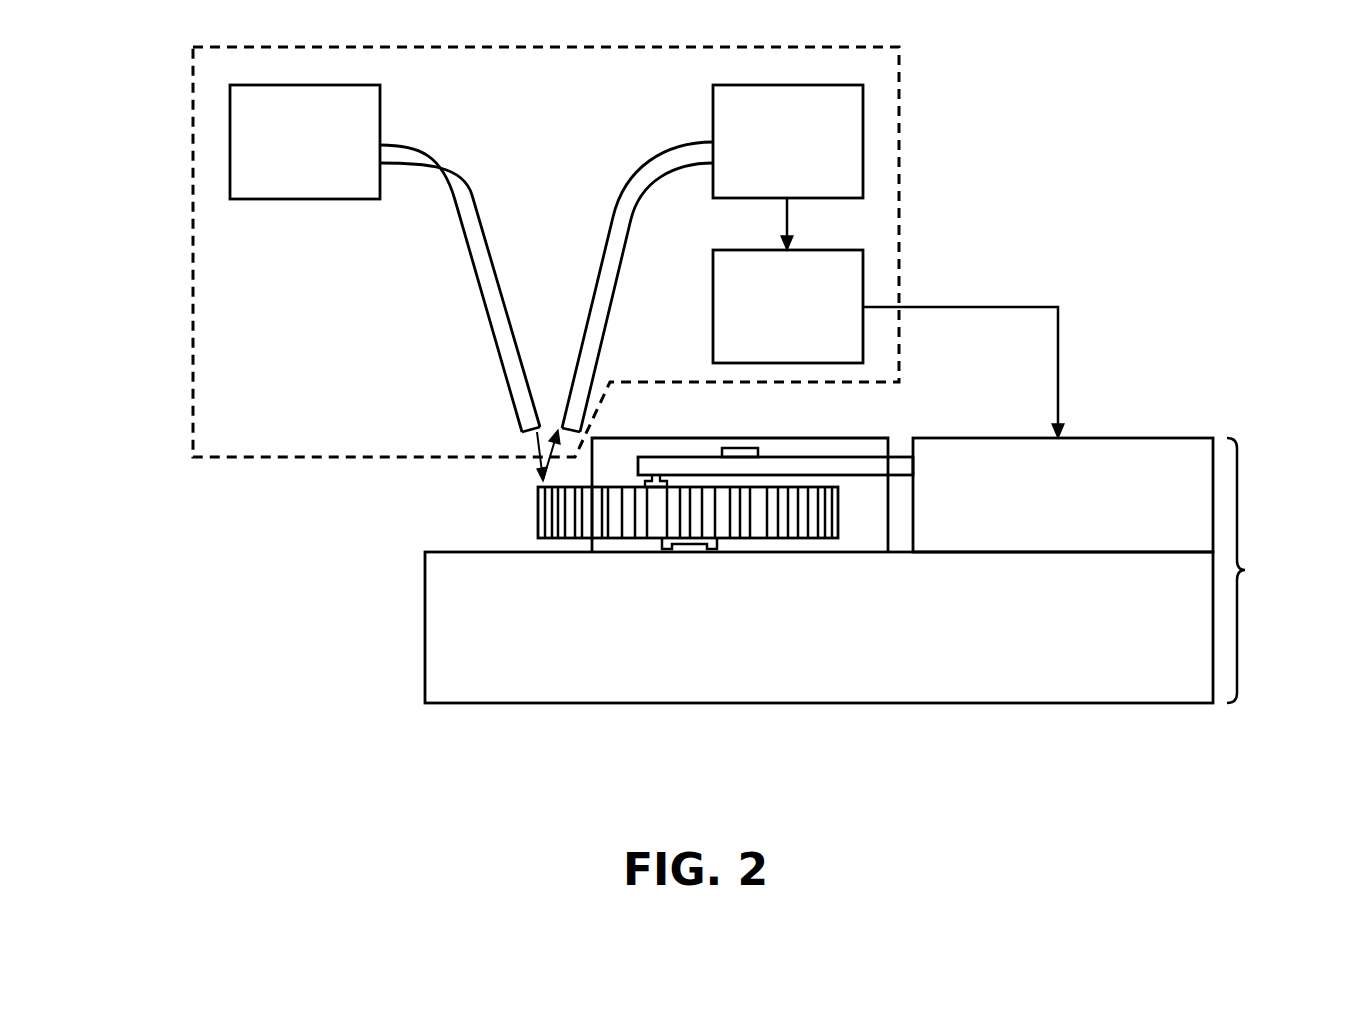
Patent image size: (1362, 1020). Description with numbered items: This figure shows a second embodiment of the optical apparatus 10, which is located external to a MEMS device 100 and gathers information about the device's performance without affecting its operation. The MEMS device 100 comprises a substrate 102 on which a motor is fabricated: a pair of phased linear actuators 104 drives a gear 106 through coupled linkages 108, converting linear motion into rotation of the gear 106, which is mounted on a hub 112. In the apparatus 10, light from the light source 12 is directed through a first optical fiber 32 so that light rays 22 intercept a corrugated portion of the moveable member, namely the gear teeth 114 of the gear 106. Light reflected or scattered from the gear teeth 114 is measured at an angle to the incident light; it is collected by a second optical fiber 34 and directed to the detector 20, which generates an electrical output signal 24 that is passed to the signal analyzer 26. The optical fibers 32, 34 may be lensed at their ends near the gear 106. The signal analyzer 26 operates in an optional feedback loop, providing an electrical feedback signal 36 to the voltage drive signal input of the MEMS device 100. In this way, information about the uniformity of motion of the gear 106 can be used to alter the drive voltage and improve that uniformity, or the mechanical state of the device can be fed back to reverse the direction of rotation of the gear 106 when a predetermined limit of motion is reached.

The optical apparatus 10 is at (275, 458).
The light source 12 is at (305, 142).
The detector 20 is at (788, 141).
The light rays 22 is at (535, 450).
The electrical output signal 24 is at (788, 210).
The signal analyzer 26 is at (788, 306).
The first optical fiber 32 is at (499, 353).
The second optical fiber 34 is at (610, 217).
The electrical feedback signal 36 is at (973, 305).
The MEMS device 100 is at (1284, 570).
The substrate 102 is at (819, 627).
The phased linear actuators 104 is at (947, 438).
The gear 106 is at (573, 535).
The linkages 108 is at (740, 448).
The hub 112 is at (688, 548).
The gear teeth 114 is at (838, 517).